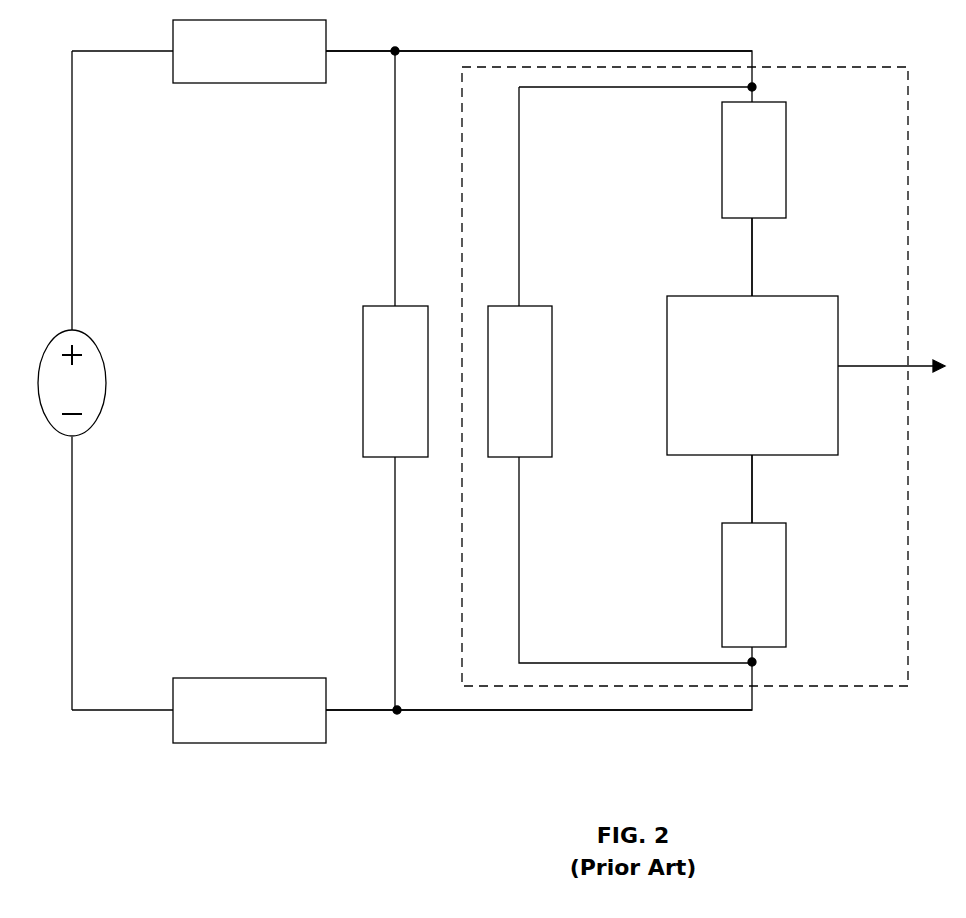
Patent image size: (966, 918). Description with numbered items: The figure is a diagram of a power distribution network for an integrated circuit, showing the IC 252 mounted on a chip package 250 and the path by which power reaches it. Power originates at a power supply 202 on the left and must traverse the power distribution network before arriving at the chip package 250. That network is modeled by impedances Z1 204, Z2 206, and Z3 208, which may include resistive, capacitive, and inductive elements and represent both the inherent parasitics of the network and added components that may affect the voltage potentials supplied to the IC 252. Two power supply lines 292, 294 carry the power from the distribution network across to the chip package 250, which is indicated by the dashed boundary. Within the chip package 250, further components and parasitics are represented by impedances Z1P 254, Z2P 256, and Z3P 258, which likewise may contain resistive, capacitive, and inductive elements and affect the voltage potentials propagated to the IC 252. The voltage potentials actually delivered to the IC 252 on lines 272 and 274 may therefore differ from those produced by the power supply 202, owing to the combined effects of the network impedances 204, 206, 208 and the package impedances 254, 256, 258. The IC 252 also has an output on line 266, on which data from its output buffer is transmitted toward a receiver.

The power supply 202 is at (106, 370).
The impedance Z1 204 is at (273, 83).
The impedance Z2 206 is at (273, 678).
The impedance Z3 208 is at (363, 360).
The chip package 250 is at (790, 67).
The integrated circuit 252 is at (792, 296).
The impedance Z1P 254 is at (722, 175).
The impedance Z2P 256 is at (786, 612).
The impedance Z3P 258 is at (552, 342).
The line 266 is at (856, 366).
The line 272 is at (752, 268).
The line 274 is at (752, 470).
The power supply line 292 is at (670, 51).
The power supply line 294 is at (672, 710).